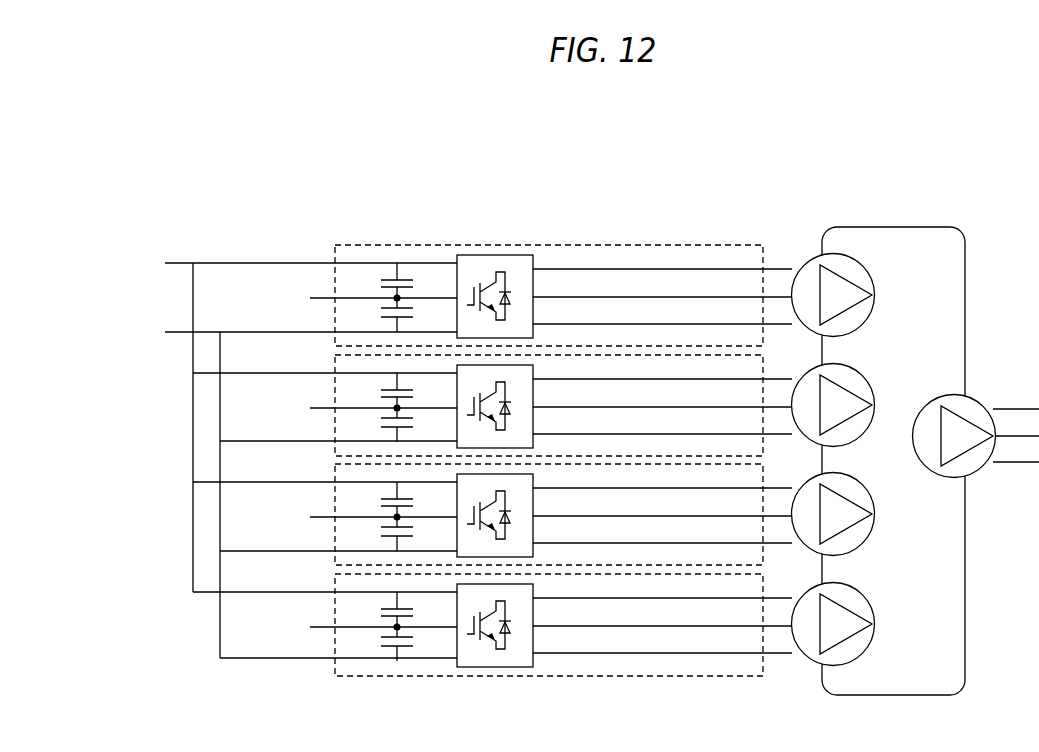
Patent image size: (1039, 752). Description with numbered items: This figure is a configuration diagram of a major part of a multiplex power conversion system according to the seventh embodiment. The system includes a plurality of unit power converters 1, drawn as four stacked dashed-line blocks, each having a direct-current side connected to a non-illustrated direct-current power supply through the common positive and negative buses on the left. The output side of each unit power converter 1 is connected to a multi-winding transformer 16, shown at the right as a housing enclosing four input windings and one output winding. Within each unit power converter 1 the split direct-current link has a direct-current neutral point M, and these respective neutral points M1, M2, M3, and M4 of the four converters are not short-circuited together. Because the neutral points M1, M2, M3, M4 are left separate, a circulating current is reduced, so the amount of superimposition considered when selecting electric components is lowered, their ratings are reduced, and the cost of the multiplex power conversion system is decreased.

The unit power converter 1 is at (703, 246).
The multi-winding transformer 16 is at (892, 227).
The direct-current neutral point M is at (300, 243).
The direct-current neutral point M1 is at (370, 297).
The direct-current neutral point M2 is at (370, 407).
The direct-current neutral point M3 is at (370, 516).
The direct-current neutral point M4 is at (370, 626).